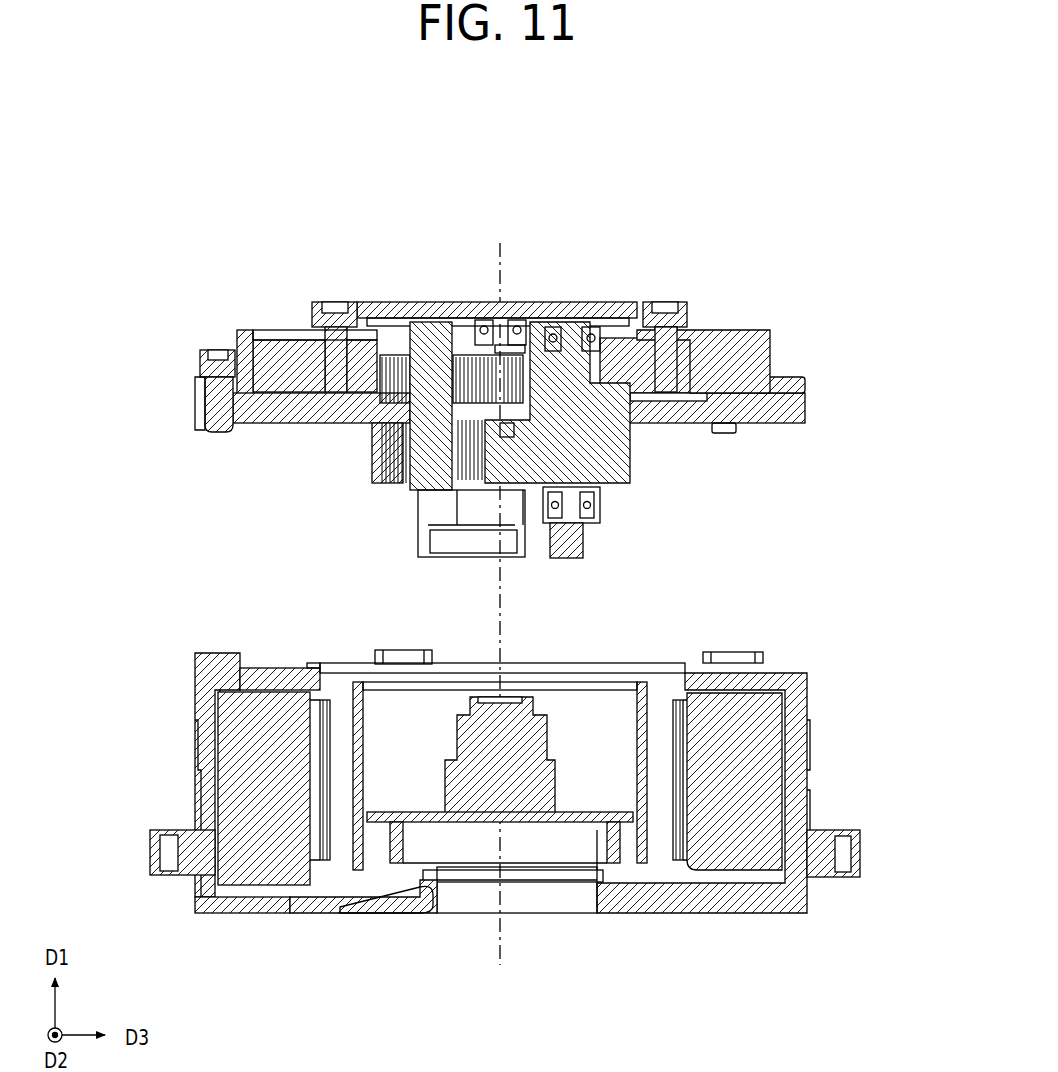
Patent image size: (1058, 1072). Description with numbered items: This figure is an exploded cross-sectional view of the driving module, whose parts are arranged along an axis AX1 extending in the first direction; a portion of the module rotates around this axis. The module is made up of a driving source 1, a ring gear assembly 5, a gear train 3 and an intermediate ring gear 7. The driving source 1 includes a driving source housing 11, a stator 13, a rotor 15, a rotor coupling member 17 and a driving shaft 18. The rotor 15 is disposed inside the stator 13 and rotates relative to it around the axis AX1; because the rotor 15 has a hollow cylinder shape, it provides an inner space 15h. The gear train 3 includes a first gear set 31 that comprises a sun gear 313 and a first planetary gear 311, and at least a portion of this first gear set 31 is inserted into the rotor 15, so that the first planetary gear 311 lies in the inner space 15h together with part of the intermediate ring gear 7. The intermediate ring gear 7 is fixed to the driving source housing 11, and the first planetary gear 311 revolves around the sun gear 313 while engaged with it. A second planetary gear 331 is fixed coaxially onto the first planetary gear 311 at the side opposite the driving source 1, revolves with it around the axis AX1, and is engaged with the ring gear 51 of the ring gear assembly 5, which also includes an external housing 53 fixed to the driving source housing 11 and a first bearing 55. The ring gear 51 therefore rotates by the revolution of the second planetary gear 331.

The driving source 1 is at (472, 766).
The gear train 3 is at (547, 374).
The ring gear assembly 5 is at (461, 295).
The intermediate ring gear 7 is at (222, 400).
The driving source housing 11 is at (205, 700).
The stator 13 is at (237, 748).
The rotor 15 is at (337, 770).
The inner space 15h is at (605, 786).
The rotor coupling member 17 is at (360, 793).
The driving shaft 18 is at (485, 800).
The first gear set 31 is at (670, 440).
The first planetary gear 311 is at (595, 443).
The sun gear 313 is at (527, 465).
The second planetary gear 331 is at (600, 380).
The ring gear 51 is at (378, 332).
The external housing 53 is at (392, 232).
The first bearing 55 is at (293, 357).
The axis AX1 is at (503, 256).